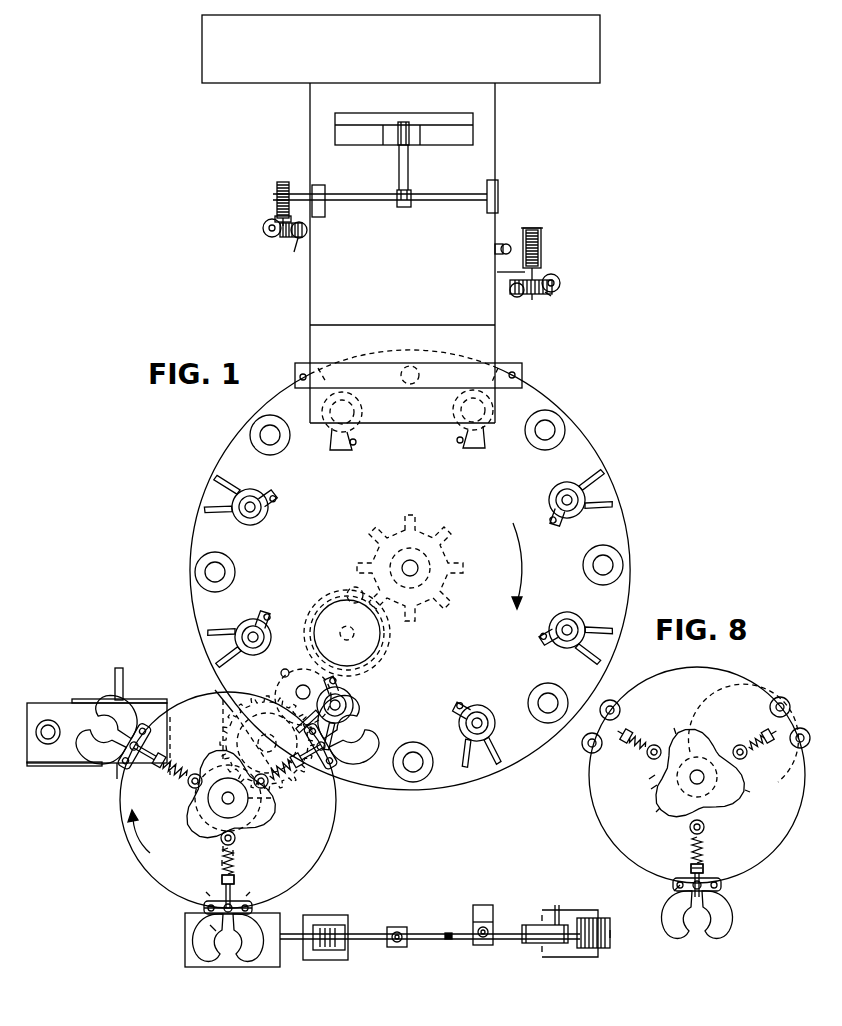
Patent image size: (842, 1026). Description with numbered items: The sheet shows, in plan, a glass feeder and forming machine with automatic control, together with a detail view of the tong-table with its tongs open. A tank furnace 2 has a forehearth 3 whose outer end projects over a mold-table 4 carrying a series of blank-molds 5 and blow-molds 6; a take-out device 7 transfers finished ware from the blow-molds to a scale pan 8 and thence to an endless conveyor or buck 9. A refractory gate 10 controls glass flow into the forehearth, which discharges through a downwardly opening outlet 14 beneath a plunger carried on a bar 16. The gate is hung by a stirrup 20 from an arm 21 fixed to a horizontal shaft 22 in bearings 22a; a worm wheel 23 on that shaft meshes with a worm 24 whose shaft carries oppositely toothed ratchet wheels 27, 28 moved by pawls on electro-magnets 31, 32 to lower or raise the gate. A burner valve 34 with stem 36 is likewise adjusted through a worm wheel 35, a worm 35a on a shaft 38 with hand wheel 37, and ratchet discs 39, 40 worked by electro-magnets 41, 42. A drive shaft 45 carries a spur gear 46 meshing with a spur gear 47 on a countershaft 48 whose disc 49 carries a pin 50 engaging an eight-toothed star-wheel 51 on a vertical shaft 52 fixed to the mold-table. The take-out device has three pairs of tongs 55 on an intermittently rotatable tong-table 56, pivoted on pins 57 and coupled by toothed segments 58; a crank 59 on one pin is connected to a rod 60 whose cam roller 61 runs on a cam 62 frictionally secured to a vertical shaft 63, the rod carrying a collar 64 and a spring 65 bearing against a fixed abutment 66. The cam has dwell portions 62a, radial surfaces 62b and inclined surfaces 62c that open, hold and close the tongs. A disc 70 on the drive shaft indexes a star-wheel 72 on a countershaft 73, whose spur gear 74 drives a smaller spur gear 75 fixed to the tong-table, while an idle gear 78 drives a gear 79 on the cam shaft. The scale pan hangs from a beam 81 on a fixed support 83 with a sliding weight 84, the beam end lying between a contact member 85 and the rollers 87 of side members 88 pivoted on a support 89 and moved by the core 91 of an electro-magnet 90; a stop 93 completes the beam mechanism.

In FIG. 1, the tank furnace 2 is at (213, 50).
In FIG. 1, the forehearth 3 is at (325, 305).
In FIG. 1, the mold-table 4 is at (600, 446).
In FIG. 1, the blank-molds 5 is at (603, 548).
In FIG. 1, the blow-molds 6 is at (558, 488).
In FIG. 1, the take-out device 7 is at (125, 828).
In FIG. 1, the scale pan 8 is at (230, 967).
In FIG. 1, the endless conveyor or buck 9 is at (45, 710).
In FIG. 1, the valve member or gate 10 is at (470, 132).
In FIG. 1, the discharge outlet 14 is at (400, 377).
In FIG. 1, the bar 16 is at (302, 362).
In FIG. 1, the stirrup 20 is at (402, 120).
In FIG. 1, the arm 21 is at (409, 165).
In FIG. 1, the horizontal shaft 22 is at (378, 202).
In FIG. 1, the bearings 22a is at (325, 194).
In FIG. 1, the worm wheel 23 is at (283, 180).
In FIG. 1, the worm 24 is at (276, 192).
In FIG. 1, the ratchet wheel 27 is at (284, 224).
In FIG. 1, the ratchet wheel 28 is at (307, 234).
In FIG. 1, the electro-magnet 31 is at (263, 228).
In FIG. 1, the electro-magnet 32 is at (297, 250).
In FIG. 1, the burner valve 34 is at (506, 242).
In FIG. 1, the worm wheel 35 is at (545, 258).
In FIG. 1, the driving worm 35a is at (544, 236).
In FIG. 1, the stem 36 is at (532, 230).
In FIG. 1, the hand wheel 37 is at (528, 298).
In FIG. 1, the shaft 38 is at (538, 296).
In FIG. 1, the ratchet disc 39 is at (550, 292).
In FIG. 1, the ratchet disc 40 is at (497, 270).
In FIG. 1, the electro-magnet 41 is at (510, 292).
In FIG. 1, the electro-magnet 42 is at (562, 283).
In FIG. 1, the drive shaft 45 is at (303, 695).
In FIG. 1, the spur gear 46 is at (373, 670).
In FIG. 1, the spur gear 47 is at (385, 660).
In FIG. 1, the countershaft 48 is at (347, 633).
In FIG. 1, the disc 49 is at (360, 637).
In FIG. 1, the pin 50 is at (350, 588).
In FIG. 1, the star-wheel 51 is at (410, 520).
In FIG. 1, the vertical shaft 52 is at (418, 567).
In FIG. 1, the tongs 55 is at (213, 944).
In FIG. 8, the tongs 55 is at (735, 895).
In FIG. 1, the tong-table 56 is at (157, 868).
In FIG. 8, the tong-table 56 is at (692, 670).
In FIG. 1, the pivot pins 57 is at (204, 908).
In FIG. 1, the toothed segments 58 is at (216, 892).
In FIG. 1, the crank 59 is at (208, 928).
In FIG. 8, the crank 59 is at (674, 890).
In FIG. 1, the rod 60 is at (236, 876).
In FIG. 8, the rod 60 is at (706, 868).
In FIG. 1, the cam roller 61 is at (238, 838).
In FIG. 8, the cam roller 61 is at (654, 745).
In FIG. 1, the cam 62 is at (262, 814).
In FIG. 8, the cam 62 is at (704, 738).
In FIG. 8, the dwell portions 62a is at (676, 734).
In FIG. 8, the radial surfaces 62b is at (655, 775).
In FIG. 8, the inclined surfaces 62c is at (657, 785).
In FIG. 1, the vertical shaft 63 is at (222, 800).
In FIG. 8, the vertical shaft 63 is at (704, 777).
In FIG. 1, the collar 64 is at (222, 846).
In FIG. 1, the spring 65 is at (234, 852).
In FIG. 1, the fixed abutment 66 is at (222, 864).
In FIG. 8, the fixed abutment 66 is at (691, 862).
In FIG. 1, the disc 70 is at (281, 672).
In FIG. 1, the star-wheel 72 is at (235, 706).
In FIG. 1, the countershaft 73 is at (267, 743).
In FIG. 1, the spur gear 74 is at (236, 730).
In FIG. 8, the spur gear 74 is at (756, 686).
In FIG. 1, the spur gear 75 is at (208, 812).
In FIG. 8, the spur gear 75 is at (733, 790).
In FIG. 1, the idle gear 78 is at (215, 690).
In FIG. 1, the gear 79 is at (278, 805).
In FIG. 1, the beam 81 is at (416, 930).
In FIG. 1, the fixed support 83 is at (340, 922).
In FIG. 1, the sliding weight 84 is at (390, 948).
In FIG. 1, the electric contact member 85 is at (483, 945).
In FIG. 1, the rollers 87 is at (557, 906).
In FIG. 1, the side members 88 is at (535, 946).
In FIG. 1, the support 89 is at (575, 958).
In FIG. 1, the electro-magnet 90 is at (605, 945).
In FIG. 1, the core 91 is at (610, 935).
In FIG. 1, the stop collar 93 is at (448, 942).